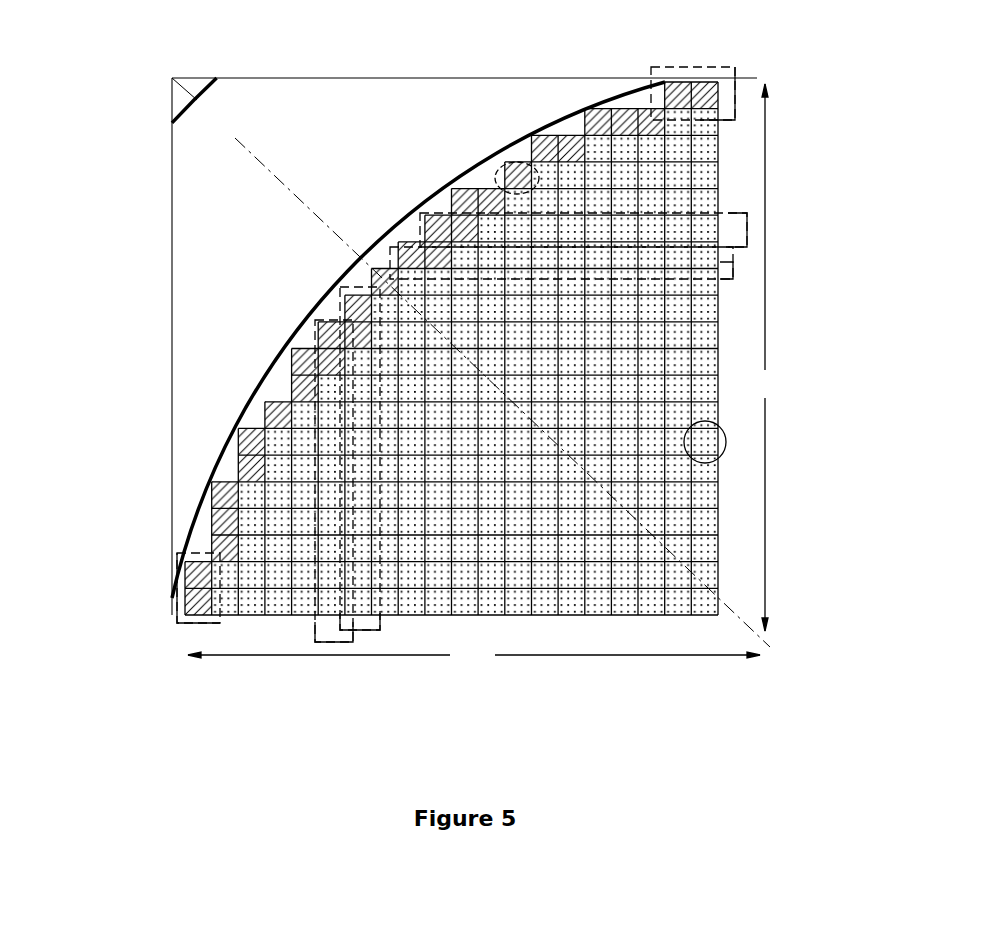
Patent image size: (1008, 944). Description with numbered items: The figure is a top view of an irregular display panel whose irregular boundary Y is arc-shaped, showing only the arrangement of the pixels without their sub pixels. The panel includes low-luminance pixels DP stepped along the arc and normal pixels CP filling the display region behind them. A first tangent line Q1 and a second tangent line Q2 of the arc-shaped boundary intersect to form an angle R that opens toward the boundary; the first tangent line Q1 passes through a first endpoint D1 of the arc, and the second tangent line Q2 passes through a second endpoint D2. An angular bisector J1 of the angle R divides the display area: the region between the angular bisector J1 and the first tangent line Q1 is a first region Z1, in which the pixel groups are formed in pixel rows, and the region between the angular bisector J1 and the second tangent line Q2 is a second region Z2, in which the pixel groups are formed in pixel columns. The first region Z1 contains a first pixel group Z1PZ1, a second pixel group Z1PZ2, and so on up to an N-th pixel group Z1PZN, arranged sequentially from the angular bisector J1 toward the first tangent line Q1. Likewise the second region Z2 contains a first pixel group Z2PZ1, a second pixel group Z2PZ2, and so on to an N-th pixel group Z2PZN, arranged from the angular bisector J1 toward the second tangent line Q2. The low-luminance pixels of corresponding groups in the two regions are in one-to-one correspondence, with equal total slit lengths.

The first tangent line Q1 is at (417, 78).
The second tangent line Q2 is at (172, 338).
The first endpoint D1 is at (662, 79).
The second endpoint D2 is at (172, 596).
The angle R is at (471, 362).
The angular bisector J1 is at (298, 199).
The irregular boundary Y is at (279, 354).
The low-luminance pixel DP is at (508, 165).
The normal pixel CP is at (727, 445).
The first region Z1 is at (770, 357).
The second region Z2 is at (474, 656).
The N-th pixel group of the first region Z1PZN is at (735, 112).
The second pixel group of the first region Z1PZ2 is at (747, 230).
The first pixel group of the first region Z1PZ1 is at (733, 270).
The N-th pixel group of the second region Z2PZN is at (220, 622).
The second pixel group of the second region Z2PZ2 is at (325, 642).
The first pixel group of the second region Z2PZ1 is at (373, 630).